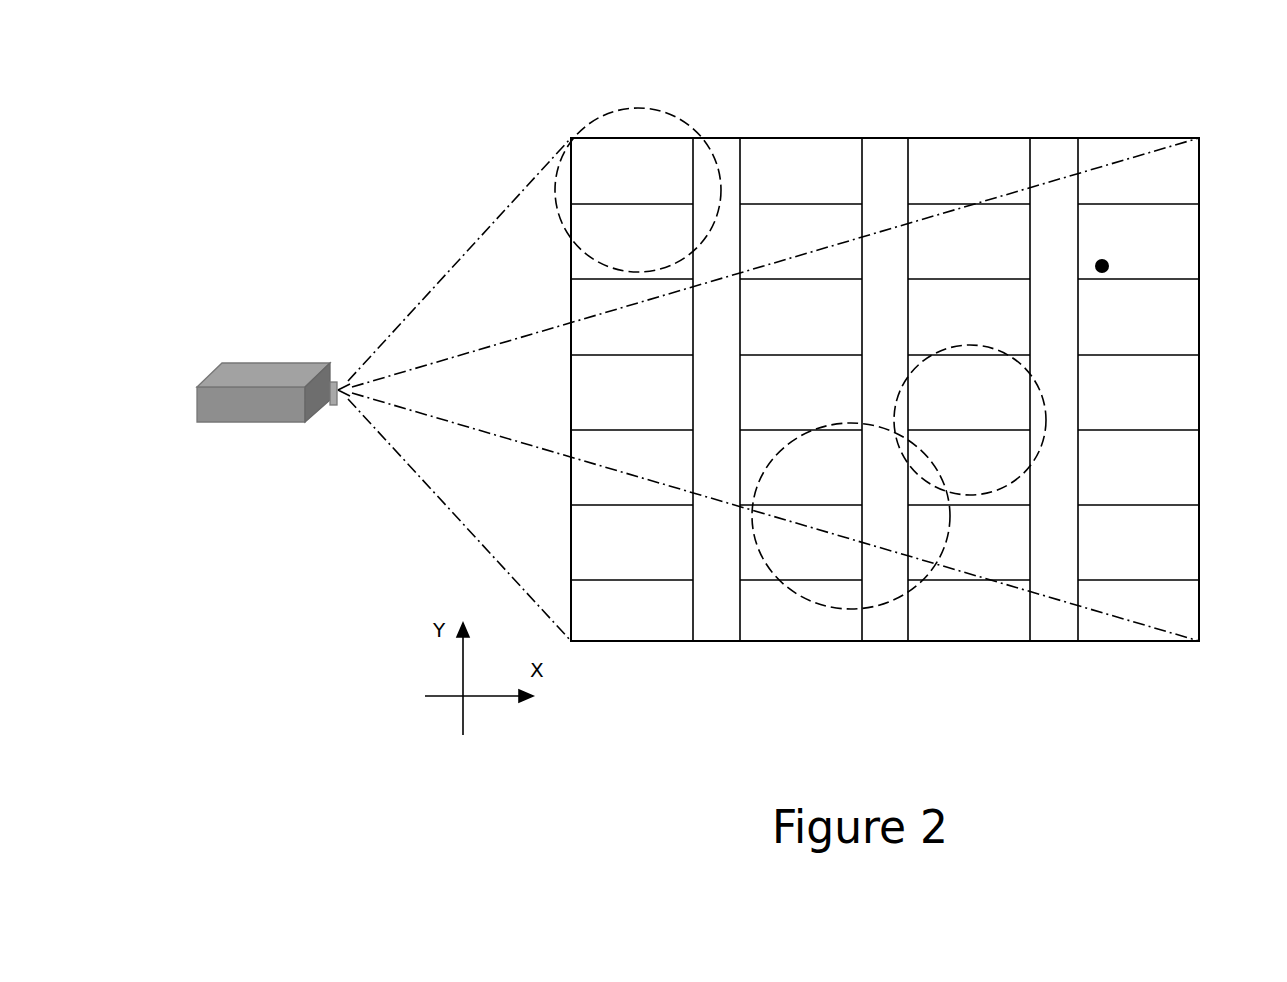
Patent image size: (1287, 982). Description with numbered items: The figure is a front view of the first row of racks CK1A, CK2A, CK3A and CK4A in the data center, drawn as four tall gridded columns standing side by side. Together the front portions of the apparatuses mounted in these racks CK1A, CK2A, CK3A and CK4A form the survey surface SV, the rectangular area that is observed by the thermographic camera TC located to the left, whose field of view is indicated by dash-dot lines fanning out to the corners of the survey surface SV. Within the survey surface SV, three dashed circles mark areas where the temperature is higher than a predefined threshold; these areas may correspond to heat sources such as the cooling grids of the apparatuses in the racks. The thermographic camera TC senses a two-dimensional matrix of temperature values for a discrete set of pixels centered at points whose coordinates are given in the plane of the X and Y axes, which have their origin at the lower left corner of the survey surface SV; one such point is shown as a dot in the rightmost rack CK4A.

The survey surface SV is at (885, 137).
The thermographic camera TC is at (250, 423).
The rack CK1A is at (657, 645).
The rack CK2A is at (837, 643).
The rack CK3A is at (1003, 643).
The rack CK4A is at (1167, 643).